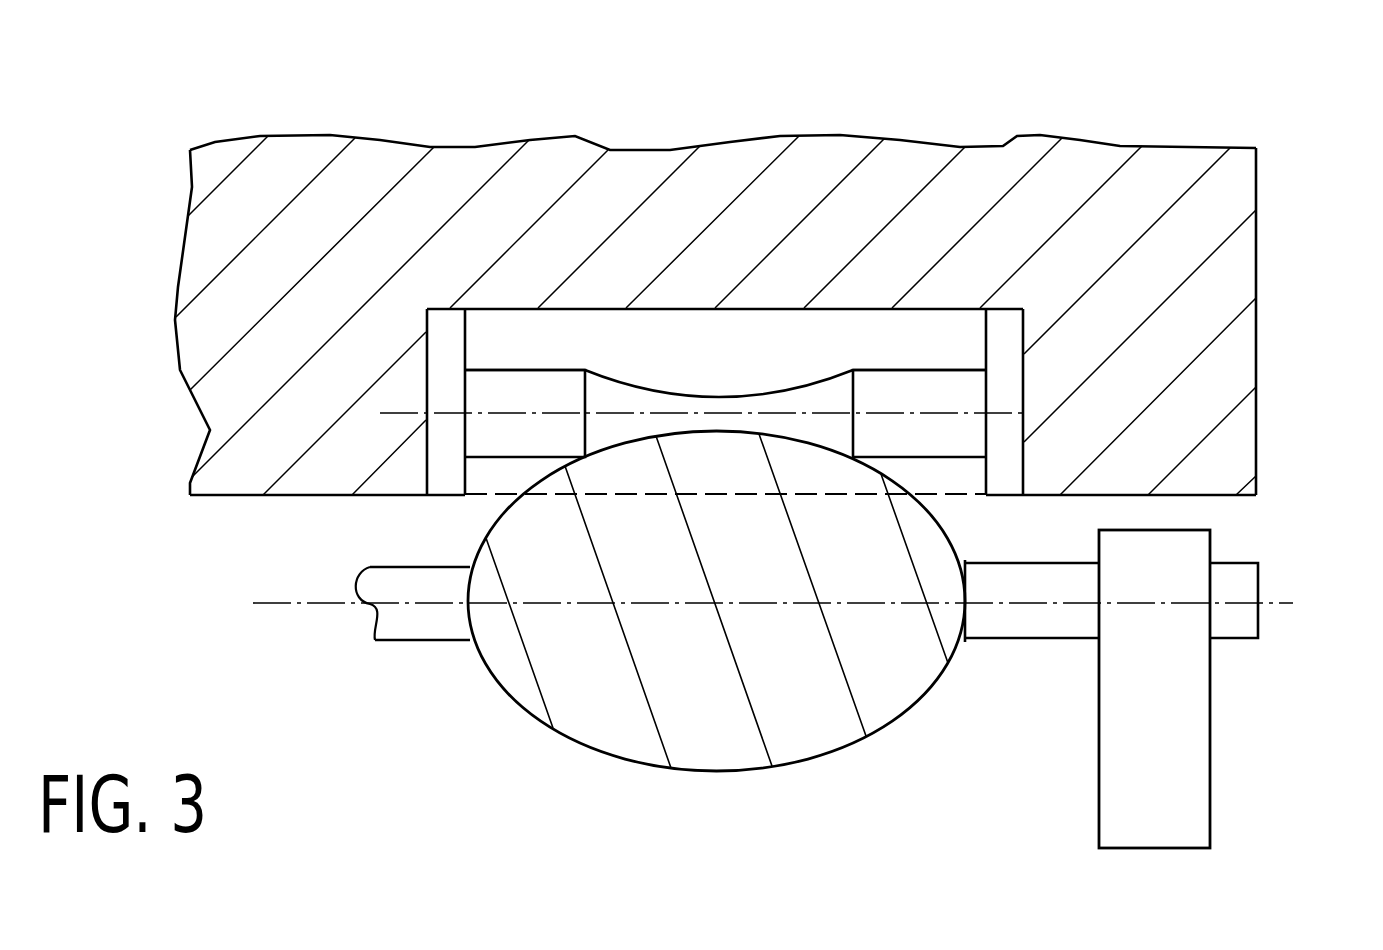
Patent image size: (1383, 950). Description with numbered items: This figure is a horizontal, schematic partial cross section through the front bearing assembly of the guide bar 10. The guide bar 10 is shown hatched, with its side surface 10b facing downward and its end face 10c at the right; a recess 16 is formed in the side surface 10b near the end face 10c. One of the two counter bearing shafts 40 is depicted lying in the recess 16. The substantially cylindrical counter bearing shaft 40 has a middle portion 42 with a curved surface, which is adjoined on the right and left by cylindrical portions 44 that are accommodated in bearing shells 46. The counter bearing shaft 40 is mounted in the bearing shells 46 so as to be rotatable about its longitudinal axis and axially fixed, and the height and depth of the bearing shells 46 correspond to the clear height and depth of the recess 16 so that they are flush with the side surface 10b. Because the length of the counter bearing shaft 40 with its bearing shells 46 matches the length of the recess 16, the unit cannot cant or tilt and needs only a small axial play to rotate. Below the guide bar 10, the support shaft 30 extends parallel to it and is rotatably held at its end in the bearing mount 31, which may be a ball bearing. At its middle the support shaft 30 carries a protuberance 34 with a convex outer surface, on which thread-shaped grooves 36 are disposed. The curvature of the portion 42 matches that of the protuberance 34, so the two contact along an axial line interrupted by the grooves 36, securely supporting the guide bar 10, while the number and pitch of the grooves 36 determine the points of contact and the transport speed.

The guide bar 10 is at (1198, 220).
The side surface of guide bar 10b is at (1247, 494).
The end face of guide bar 10c is at (1258, 370).
The recess 16 is at (773, 330).
The support shaft 30 is at (387, 630).
The bearing mount 31 is at (1192, 738).
The protuberance 34 is at (493, 687).
The thread groove 36 is at (757, 737).
The counter bearing shaft 40 is at (520, 370).
The middle portion 42 is at (692, 395).
The cylindrical portion 44 is at (567, 387).
The bearing shell 46 is at (457, 350).